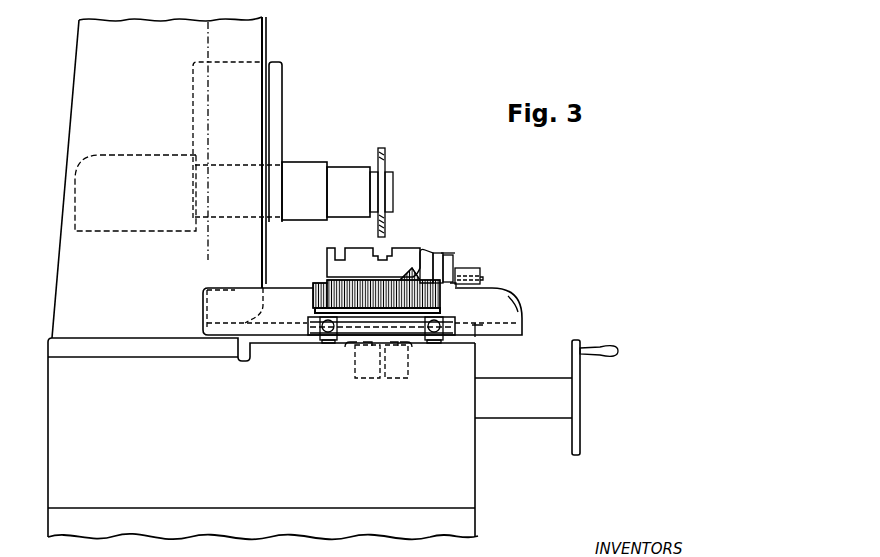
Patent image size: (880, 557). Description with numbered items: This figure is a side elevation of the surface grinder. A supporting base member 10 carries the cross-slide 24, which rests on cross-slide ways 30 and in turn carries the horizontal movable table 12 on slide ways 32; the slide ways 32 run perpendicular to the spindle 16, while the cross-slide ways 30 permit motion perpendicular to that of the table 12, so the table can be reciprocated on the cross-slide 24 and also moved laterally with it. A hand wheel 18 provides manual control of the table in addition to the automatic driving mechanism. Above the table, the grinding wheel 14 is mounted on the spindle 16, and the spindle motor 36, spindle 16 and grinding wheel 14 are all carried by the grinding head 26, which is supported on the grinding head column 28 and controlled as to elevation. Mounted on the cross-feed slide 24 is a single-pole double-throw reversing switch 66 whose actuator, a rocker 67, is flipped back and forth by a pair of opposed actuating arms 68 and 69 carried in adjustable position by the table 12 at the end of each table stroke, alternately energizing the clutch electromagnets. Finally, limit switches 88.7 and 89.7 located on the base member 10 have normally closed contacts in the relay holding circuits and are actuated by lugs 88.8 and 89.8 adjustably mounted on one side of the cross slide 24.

The supporting base member 10 is at (388, 473).
The horizontal movable table 12 is at (400, 247).
The grinding wheel 14 is at (386, 158).
The spindle 16 is at (394, 186).
The hand wheel 18 is at (579, 437).
The cross-slide 24 is at (518, 297).
The grinding head 26 is at (283, 121).
The grinding head column 28 is at (143, 71).
The cross-slide ways 30 is at (484, 336).
The slide ways 32 is at (422, 267).
The spindle motor 36 is at (98, 196).
The S. P. D. T. reversing switch 66 is at (465, 268).
The rocker 67 is at (452, 285).
The actuating arm 68 is at (440, 251).
The actuating arm 69 is at (450, 254).
The SPDT limit switch 88.7 is at (413, 341).
The lug 88.8 is at (434, 341).
The SPDT limit switch 89.7 is at (347, 341).
The lug 89.8 is at (328, 341).